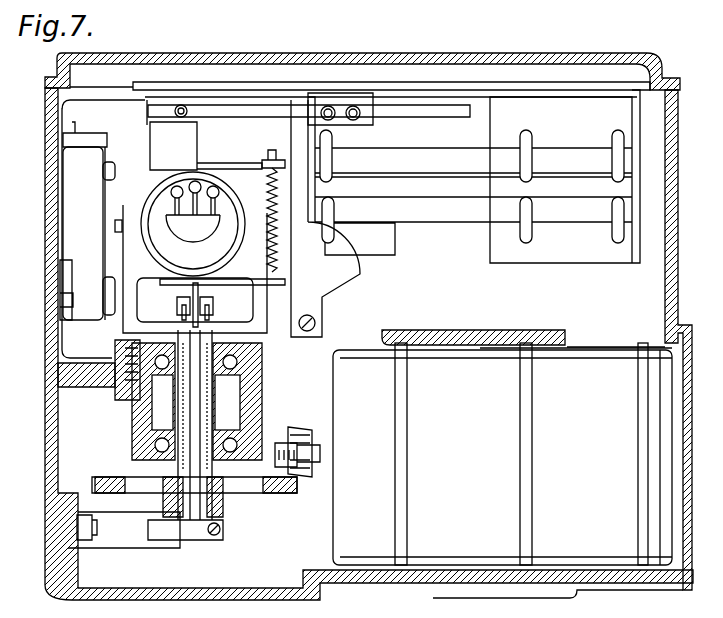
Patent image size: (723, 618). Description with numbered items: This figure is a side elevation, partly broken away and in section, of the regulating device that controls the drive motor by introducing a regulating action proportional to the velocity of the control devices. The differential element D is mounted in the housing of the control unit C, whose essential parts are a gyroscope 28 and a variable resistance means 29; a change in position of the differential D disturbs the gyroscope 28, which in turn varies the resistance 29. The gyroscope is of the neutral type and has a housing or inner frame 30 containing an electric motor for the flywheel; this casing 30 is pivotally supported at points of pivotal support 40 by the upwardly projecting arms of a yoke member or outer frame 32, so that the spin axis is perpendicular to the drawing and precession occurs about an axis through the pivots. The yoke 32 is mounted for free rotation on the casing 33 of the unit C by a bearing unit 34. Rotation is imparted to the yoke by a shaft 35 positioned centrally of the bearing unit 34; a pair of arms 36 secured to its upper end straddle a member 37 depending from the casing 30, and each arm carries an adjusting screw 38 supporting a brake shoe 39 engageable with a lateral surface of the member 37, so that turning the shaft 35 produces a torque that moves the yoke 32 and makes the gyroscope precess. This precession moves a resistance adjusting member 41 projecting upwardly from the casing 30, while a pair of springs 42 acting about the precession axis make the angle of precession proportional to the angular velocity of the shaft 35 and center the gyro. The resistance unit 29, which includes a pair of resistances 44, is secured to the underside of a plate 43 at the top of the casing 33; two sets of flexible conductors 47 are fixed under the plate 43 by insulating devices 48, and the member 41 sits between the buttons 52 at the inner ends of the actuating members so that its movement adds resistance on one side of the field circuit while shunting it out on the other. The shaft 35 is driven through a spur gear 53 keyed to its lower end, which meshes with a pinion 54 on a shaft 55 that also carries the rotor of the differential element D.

The control unit C is at (558, 55).
The differential element D is at (484, 362).
The gyroscope 28 is at (160, 243).
The variable resistance means 29 is at (350, 95).
The housing or inner frame 30 is at (160, 192).
The yoke member or outer frame 32 is at (265, 313).
The casing 33 is at (85, 375).
The bearing unit 34 is at (196, 405).
The shaft 35 is at (175, 398).
The arms 36 is at (177, 303).
The member 37 is at (160, 328).
The adjusting screw 38 is at (180, 311).
The brake shoe 39 is at (175, 292).
The points of pivotal support 40 is at (115, 226).
The resistance adjusting member 41 is at (192, 150).
The springs 42 is at (282, 160).
The plate 43 is at (478, 86).
The resistances 44 is at (442, 160).
The flexible conductors 47 is at (263, 112).
The insulating devices 48 is at (372, 121).
The buttons 52 is at (183, 119).
The spur gear 53 is at (274, 493).
The pinion 54 is at (303, 429).
The shaft 55 is at (312, 457).